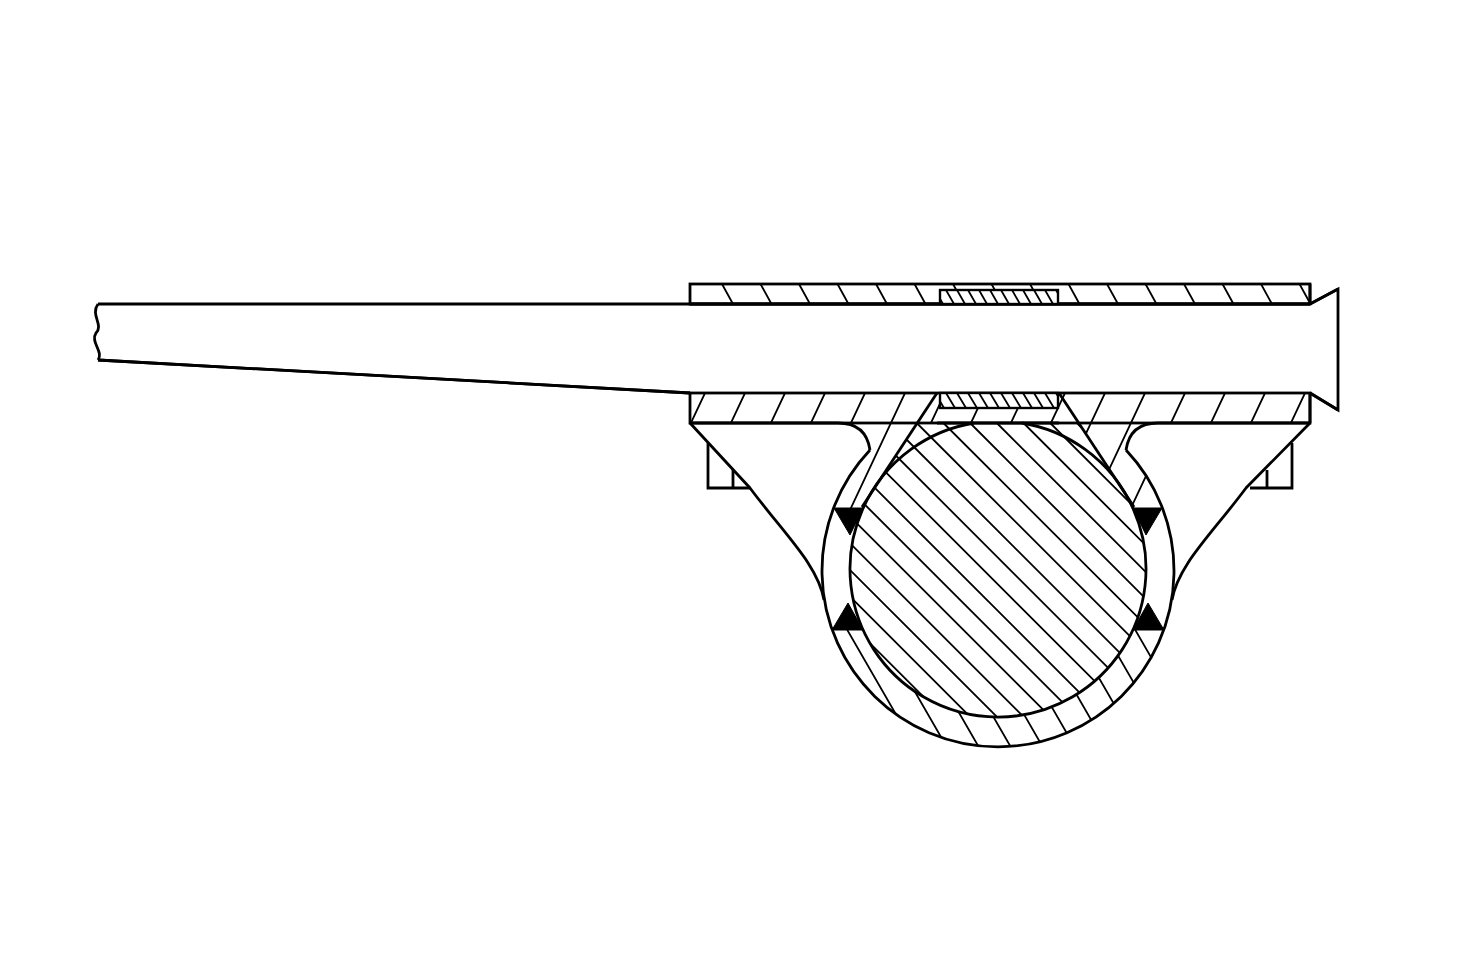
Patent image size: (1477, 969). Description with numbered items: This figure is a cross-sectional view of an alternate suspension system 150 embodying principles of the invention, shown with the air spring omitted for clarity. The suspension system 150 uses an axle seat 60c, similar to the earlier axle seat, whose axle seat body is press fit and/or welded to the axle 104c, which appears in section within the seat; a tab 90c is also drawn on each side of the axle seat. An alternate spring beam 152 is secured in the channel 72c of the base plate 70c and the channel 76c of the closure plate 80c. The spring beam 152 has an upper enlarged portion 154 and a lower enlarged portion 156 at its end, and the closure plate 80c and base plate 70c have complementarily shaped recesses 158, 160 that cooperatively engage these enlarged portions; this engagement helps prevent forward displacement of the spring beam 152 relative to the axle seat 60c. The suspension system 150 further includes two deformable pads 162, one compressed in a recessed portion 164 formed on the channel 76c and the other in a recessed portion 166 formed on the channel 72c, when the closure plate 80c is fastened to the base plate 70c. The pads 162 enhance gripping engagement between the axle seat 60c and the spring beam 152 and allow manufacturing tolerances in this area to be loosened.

The suspension system 150 is at (581, 116).
The spring beam 152 is at (774, 322).
The closure plate 80c is at (1047, 249).
The channel 76c is at (832, 304).
The channel 72c is at (713, 393).
The base plate 70c is at (985, 576).
The stop tab 90c is at (730, 500).
The axle 104c is at (1148, 583).
The axle seat 60c is at (842, 716).
The deformable pads 162 is at (1040, 315).
The recessed portion 164 is at (972, 300).
The recessed portion 166 is at (1012, 400).
The upper enlarged portion 154 is at (1333, 285).
The lower enlarged portion 156 is at (1333, 423).
The recess 158 is at (1308, 300).
The recess 160 is at (1303, 398).